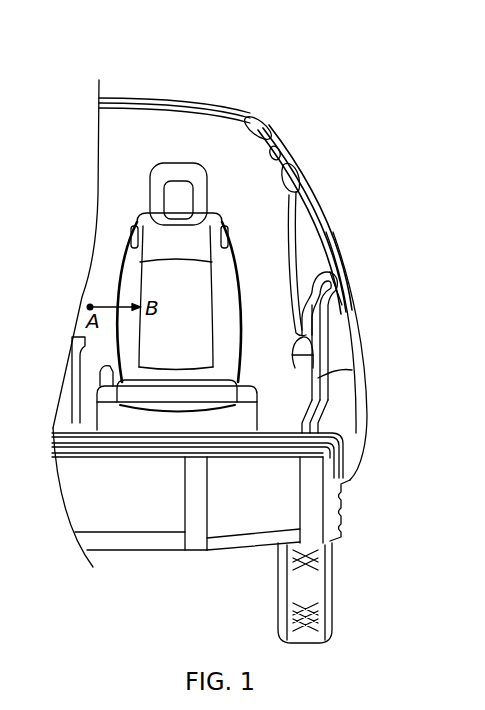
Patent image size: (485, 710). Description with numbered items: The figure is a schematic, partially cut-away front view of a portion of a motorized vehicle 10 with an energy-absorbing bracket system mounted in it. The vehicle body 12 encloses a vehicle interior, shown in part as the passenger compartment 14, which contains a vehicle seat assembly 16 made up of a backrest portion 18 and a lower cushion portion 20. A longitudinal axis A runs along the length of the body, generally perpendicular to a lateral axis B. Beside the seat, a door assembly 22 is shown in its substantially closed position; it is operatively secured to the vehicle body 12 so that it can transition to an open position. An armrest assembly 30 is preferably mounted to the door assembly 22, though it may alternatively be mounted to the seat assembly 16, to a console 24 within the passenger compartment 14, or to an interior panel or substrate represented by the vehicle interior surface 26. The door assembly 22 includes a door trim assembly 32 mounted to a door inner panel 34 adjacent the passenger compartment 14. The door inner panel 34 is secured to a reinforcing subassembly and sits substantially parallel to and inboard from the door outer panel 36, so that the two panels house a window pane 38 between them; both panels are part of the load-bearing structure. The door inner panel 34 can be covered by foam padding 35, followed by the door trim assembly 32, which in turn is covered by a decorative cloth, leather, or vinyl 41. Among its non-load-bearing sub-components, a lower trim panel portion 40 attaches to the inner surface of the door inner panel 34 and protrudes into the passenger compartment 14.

The vehicle 10 is at (272, 54).
The vehicle body 12 is at (143, 99).
The passenger compartment 14 is at (198, 105).
The vehicle seat assembly 16 is at (222, 196).
The backrest portion 18 is at (140, 213).
The lower cushion portion 20 is at (241, 381).
The door assembly 22 is at (363, 290).
The console 24 is at (76, 334).
The vehicle interior surface 26 is at (282, 139).
The armrest assembly 30 is at (292, 340).
The door trim assembly 32 is at (307, 262).
The door inner panel 34 is at (328, 402).
The foam material or padding 35 is at (332, 279).
The door outer panel 36 is at (356, 350).
The window pane 38 is at (309, 192).
The lower trim panel portion 40 is at (312, 393).
The decorative cloth, leather, or vinyl 41 is at (352, 370).